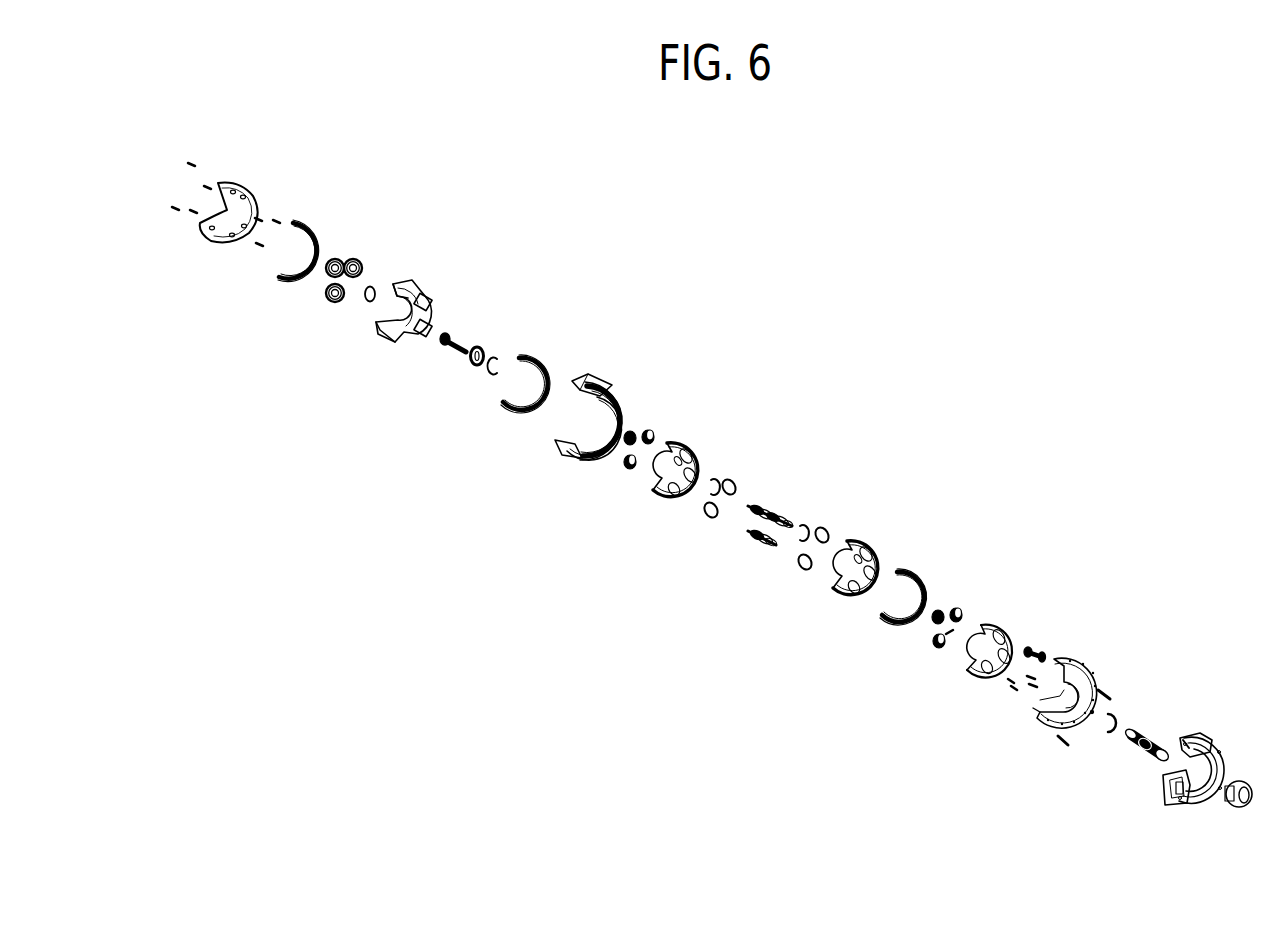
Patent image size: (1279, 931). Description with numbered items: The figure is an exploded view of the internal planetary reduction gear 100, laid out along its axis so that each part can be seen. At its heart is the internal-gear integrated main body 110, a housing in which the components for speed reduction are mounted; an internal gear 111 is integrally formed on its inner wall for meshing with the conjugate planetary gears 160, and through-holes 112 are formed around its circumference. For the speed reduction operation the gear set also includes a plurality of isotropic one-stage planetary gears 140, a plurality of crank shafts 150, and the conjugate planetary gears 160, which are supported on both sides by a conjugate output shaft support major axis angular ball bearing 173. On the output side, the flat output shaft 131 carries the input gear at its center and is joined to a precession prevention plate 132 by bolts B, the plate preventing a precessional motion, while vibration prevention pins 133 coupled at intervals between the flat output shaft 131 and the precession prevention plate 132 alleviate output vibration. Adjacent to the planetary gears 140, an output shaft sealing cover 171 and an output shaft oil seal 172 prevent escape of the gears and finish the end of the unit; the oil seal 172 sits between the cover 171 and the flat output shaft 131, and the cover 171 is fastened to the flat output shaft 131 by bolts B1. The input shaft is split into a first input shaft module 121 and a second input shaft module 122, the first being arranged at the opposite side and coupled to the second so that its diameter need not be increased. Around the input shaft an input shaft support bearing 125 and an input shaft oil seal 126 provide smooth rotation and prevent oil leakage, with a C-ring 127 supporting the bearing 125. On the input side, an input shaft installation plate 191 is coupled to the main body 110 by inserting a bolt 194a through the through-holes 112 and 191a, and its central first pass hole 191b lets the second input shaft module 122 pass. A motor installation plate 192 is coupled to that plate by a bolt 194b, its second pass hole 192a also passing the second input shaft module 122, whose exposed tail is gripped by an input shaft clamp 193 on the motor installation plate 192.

The internal planetary reduction gear 100 is at (872, 326).
The internal-gear integrated main body 110 is at (568, 464).
The internal gear 111 is at (607, 399).
The through-holes 112 is at (598, 378).
The first input shaft module 121 is at (446, 352).
The second input shaft module 122 is at (1143, 752).
The input shaft support bearing 125 is at (478, 364).
The input shaft oil seal 126 is at (1108, 736).
The C-ring 127 is at (484, 356).
The flat output shaft 131 is at (428, 283).
The precession prevention plate 132 is at (1005, 622).
The vibration prevention pins 133 is at (928, 630).
The isotropic 1-stage planetary gears 140 is at (357, 253).
The crank shafts 150 is at (758, 552).
The conjugate planetary gears 160 is at (658, 502).
The output shaft sealing cover 171 is at (245, 198).
The output shaft oil seal 172 is at (300, 281).
The conjugate output shaft support major axis angular ball bearing 173 is at (515, 410).
The input shaft installation plate 191 is at (1090, 648).
The through-holes 191a is at (1038, 730).
The first pass hole 191b is at (1060, 702).
The motor installation plate 192 is at (1213, 735).
The second pass hole 192a is at (1183, 800).
The input shaft clamp 193 is at (1240, 772).
The bolt 194a is at (1110, 694).
The bolt 194b is at (1190, 735).
The bolts B is at (1037, 650).
The bolts B1 is at (206, 167).